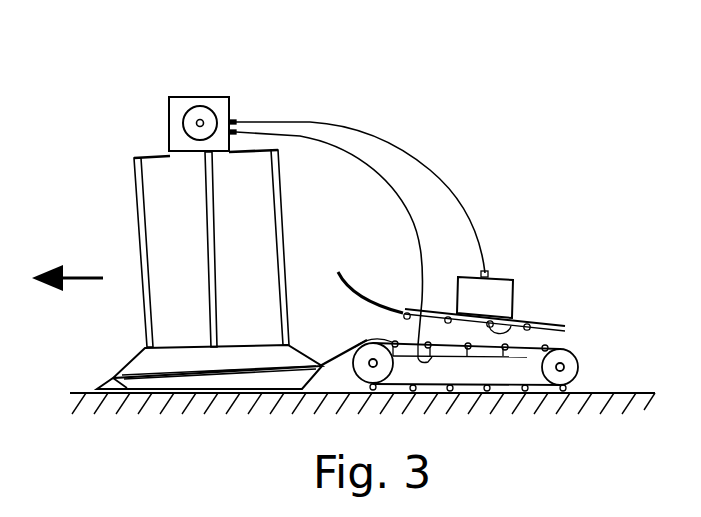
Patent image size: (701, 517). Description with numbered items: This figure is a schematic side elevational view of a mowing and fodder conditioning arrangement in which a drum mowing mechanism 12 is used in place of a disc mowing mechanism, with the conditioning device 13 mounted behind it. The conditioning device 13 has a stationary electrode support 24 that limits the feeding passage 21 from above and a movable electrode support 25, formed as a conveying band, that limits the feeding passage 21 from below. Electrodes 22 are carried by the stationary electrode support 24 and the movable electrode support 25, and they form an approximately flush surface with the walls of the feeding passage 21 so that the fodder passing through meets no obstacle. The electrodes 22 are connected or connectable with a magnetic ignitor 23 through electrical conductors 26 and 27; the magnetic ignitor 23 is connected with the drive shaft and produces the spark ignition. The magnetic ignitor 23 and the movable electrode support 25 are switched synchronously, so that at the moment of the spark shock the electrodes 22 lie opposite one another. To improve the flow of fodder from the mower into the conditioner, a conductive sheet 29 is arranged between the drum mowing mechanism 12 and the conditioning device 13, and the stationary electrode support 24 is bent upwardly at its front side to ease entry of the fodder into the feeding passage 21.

The drum mowing mechanism 12 is at (163, 238).
The conditioning device 13 is at (548, 278).
The feeding passage 21 is at (523, 337).
The electrodes 22 is at (521, 320).
The magnetic ignitor 23 is at (222, 96).
The stationary electrode support 24 is at (432, 307).
The movable electrode support 25 is at (597, 356).
The electrical conductor 26 is at (410, 158).
The electrical conductor 27 is at (397, 210).
The conductive sheet 29 is at (320, 365).